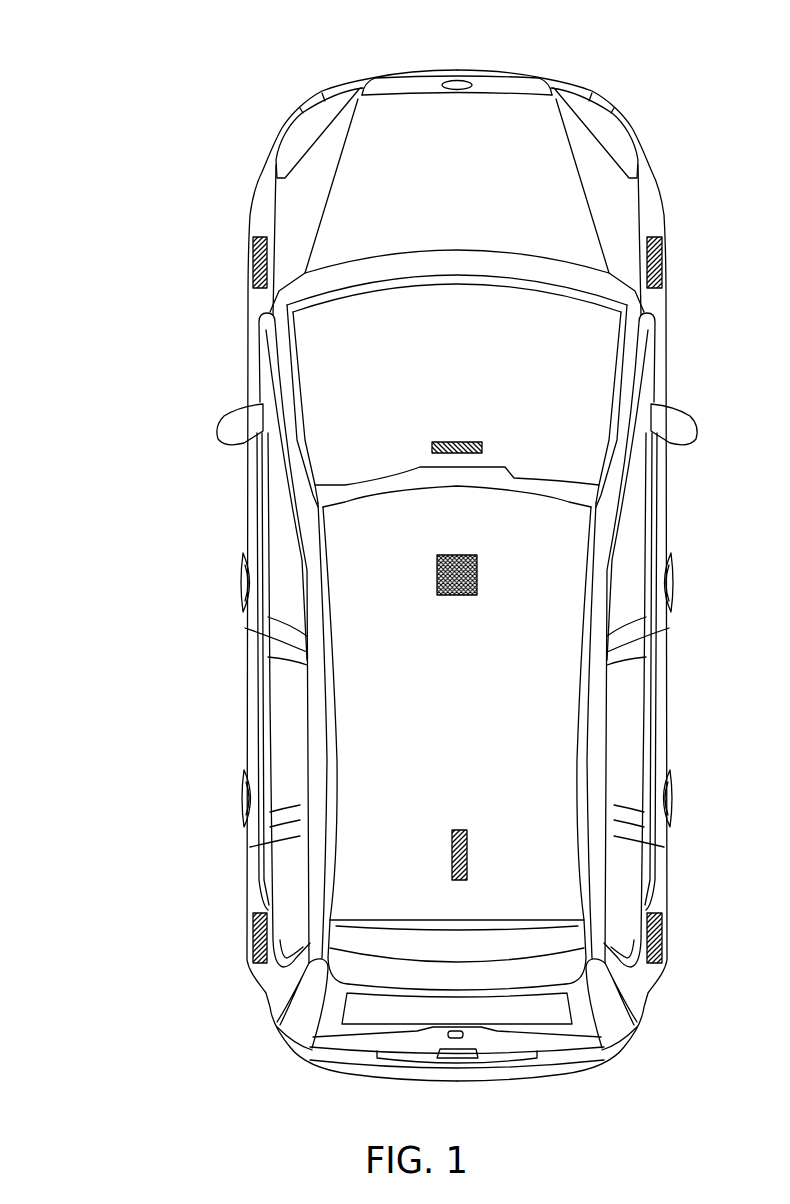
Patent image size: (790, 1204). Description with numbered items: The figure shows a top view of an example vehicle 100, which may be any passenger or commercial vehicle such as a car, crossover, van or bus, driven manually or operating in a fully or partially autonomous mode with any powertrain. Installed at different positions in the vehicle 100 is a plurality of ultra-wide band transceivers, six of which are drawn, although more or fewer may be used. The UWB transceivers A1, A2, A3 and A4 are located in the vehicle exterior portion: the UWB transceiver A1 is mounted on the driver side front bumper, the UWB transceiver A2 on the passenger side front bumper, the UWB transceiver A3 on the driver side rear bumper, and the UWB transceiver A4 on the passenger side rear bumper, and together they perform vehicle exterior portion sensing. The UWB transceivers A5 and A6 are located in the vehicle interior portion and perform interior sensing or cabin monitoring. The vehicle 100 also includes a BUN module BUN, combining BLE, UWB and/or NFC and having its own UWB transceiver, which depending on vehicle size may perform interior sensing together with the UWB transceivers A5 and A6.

The vehicle 100 is at (153, 80).
The UWB transceiver A1 is at (239, 262).
The UWB transceiver A2 is at (674, 262).
The UWB transceiver A3 is at (241, 938).
The UWB transceiver A4 is at (672, 938).
The UWB transceiver A5 is at (457, 434).
The UWB transceiver A6 is at (477, 855).
The BUN module BUN is at (454, 590).